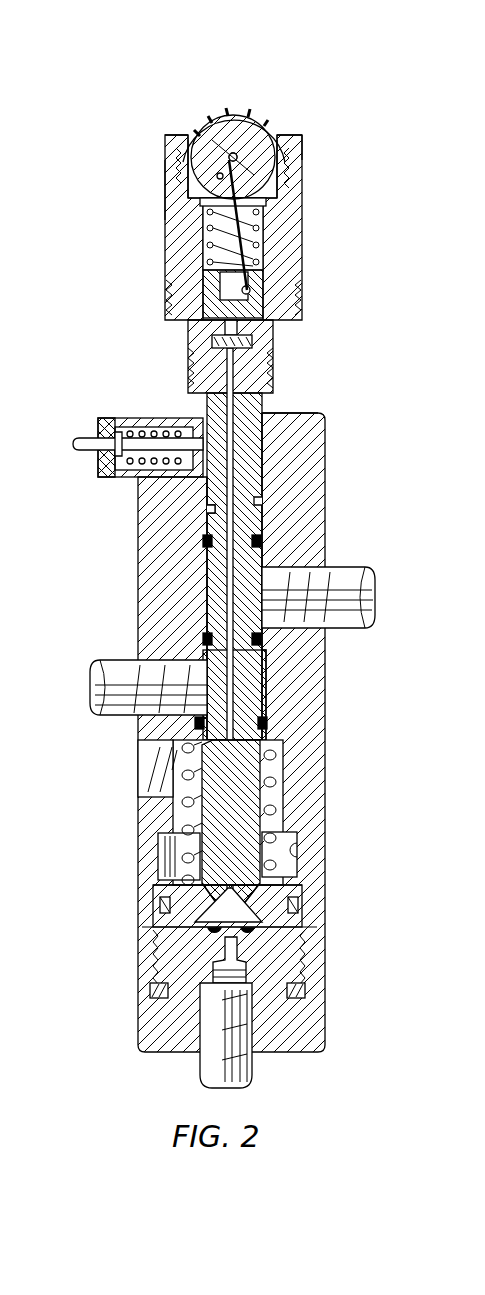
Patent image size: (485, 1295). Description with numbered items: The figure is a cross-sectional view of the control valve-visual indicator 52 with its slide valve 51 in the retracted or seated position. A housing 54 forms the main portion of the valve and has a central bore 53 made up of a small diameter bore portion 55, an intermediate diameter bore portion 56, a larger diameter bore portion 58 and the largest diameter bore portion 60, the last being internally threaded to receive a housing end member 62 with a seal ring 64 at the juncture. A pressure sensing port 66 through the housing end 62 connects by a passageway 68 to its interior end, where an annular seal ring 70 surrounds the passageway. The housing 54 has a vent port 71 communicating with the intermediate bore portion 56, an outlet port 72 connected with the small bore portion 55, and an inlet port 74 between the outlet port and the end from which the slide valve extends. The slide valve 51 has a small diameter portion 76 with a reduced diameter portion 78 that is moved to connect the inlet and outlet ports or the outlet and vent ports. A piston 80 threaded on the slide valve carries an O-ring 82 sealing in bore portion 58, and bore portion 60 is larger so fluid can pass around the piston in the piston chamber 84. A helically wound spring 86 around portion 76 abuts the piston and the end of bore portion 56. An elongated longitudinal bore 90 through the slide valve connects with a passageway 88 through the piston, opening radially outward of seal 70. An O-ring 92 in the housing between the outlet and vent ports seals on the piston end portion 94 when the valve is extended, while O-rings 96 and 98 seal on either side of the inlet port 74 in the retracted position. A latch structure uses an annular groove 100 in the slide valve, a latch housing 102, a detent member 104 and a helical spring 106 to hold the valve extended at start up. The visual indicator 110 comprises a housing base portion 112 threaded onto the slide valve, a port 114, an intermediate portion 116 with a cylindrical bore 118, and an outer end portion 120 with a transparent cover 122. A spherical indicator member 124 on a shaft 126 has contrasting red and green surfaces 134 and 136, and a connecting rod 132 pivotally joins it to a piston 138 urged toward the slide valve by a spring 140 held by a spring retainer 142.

The slide valve 51 is at (294, 360).
The control valve-visual indicator 52 is at (304, 157).
The central bore 53 is at (262, 502).
The housing 54 is at (303, 438).
The small diameter bore portion 55 is at (262, 412).
The intermediate diameter bore portion 56 is at (280, 763).
The larger diameter bore portion 58 is at (290, 853).
The largest diameter bore portion 60 is at (300, 920).
The housing end member 62 is at (307, 1028).
The seal ring 64 is at (150, 992).
The pressure sensing port 66 is at (228, 1030).
The passageway 68 is at (247, 950).
The annular seal ring 70 is at (213, 934).
The vent port 71 is at (145, 768).
The outlet port 72 is at (170, 672).
The inlet port 74 is at (300, 593).
The small diameter portion 76 is at (213, 597).
The reduced diameter portion 78 is at (253, 690).
The piston 80 is at (160, 886).
The O-ring 82 is at (160, 904).
The piston chamber 84 is at (170, 852).
The helically wound spring 86 is at (267, 782).
The passageway 88 is at (240, 905).
The elongated longitudinal bore 90 is at (233, 378).
The O-ring 92 is at (197, 722).
The piston end portion 94 is at (245, 792).
The O-ring 96 is at (208, 638).
The O-ring 98 is at (205, 543).
The annular groove 100 is at (207, 513).
The latch housing 102 is at (95, 438).
The detent member 104 is at (123, 418).
The helical spring 106 is at (110, 478).
The visual indicator 110 is at (152, 193).
The housing base portion 112 is at (195, 363).
The port 114 is at (205, 334).
The indicator housing intermediate portion 116 is at (173, 256).
The cylindrical bore 118 is at (250, 254).
The indicator housing outer end portion 120 is at (302, 147).
The transparent cover 122 is at (225, 105).
The spherical indicator member 124 is at (213, 116).
The shaft 126 is at (205, 150).
The connecting rod 132 is at (215, 231).
The red surface 134 is at (243, 147).
The green surface 136 is at (175, 192).
The piston 138 is at (250, 308).
The spring 140 is at (250, 234).
The spring retainer 142 is at (245, 210).